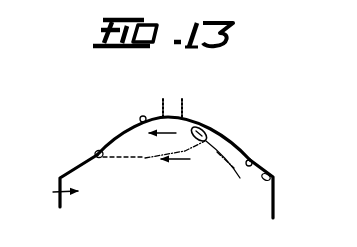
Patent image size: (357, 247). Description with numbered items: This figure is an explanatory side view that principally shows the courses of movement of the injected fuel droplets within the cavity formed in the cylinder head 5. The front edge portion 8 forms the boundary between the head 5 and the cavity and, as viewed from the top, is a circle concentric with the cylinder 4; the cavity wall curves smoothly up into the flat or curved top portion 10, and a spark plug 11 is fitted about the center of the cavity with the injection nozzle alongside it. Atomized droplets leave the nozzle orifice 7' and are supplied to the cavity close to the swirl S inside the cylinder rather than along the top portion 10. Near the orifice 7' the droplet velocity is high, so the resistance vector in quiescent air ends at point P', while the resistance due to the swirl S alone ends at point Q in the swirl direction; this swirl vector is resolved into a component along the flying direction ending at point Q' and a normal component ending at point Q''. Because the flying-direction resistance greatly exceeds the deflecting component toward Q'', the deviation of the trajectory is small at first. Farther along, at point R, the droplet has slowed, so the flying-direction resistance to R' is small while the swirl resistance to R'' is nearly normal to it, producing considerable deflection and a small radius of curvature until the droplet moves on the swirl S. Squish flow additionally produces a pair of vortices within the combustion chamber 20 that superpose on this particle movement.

The cylinder 4 is at (275, 202).
The cylinder head 5 is at (78, 165).
The nozzle orifice 7' is at (167, 132).
The front edge portion 8 is at (258, 168).
The top portion 10 is at (143, 116).
The spark plug 11 is at (185, 110).
The combustion chamber 20 is at (50, 196).
The point P' is at (181, 177).
The point Q is at (125, 185).
The point Q' is at (139, 142).
The point Q'' is at (146, 178).
The point R is at (189, 148).
The point R' is at (231, 128).
The point R'' is at (221, 106).
The swirl S is at (143, 158).